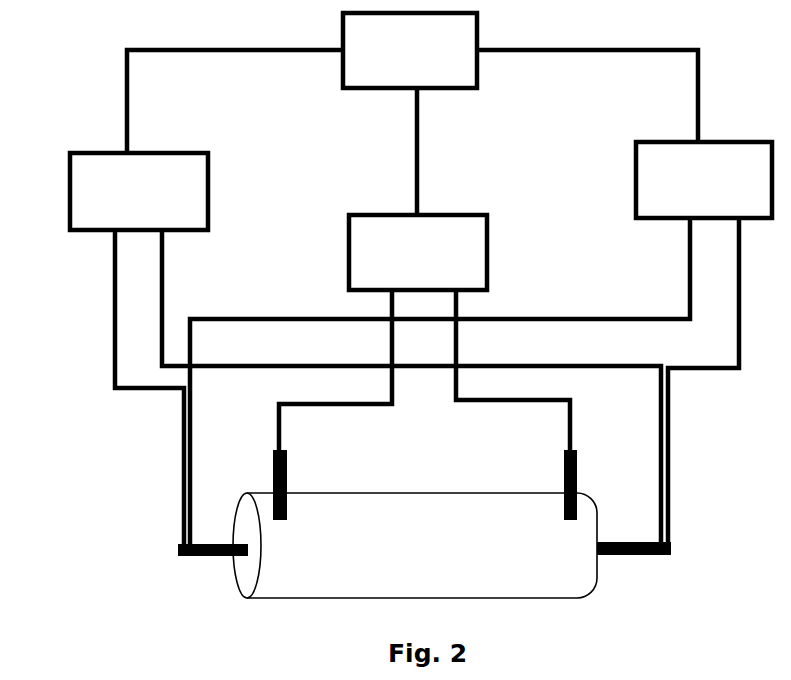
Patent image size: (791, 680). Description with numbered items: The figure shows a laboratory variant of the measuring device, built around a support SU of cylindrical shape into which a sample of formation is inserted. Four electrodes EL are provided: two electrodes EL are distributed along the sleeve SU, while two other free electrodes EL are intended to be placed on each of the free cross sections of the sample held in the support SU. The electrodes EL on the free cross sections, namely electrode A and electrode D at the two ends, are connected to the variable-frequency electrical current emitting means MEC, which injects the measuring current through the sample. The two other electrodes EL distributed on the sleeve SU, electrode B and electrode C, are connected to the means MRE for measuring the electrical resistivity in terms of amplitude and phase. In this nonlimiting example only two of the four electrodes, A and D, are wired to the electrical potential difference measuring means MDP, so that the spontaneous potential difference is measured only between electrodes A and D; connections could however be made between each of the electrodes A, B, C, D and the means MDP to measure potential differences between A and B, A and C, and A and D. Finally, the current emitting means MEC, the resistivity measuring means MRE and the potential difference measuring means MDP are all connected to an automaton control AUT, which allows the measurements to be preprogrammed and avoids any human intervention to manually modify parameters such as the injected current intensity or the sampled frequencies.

The automaton control AUT is at (410, 50).
The variable-frequency electrical current emitting means MEC is at (139, 191).
The electrical potential difference measuring means MDP is at (704, 180).
The means for measuring the electrical resistivity in terms of amplitude and phase MRE is at (418, 252).
The support SU is at (590, 573).
The electrodes EL is at (223, 557).
The electrode A is at (213, 536).
The electrode B is at (294, 485).
The electrode C is at (556, 485).
The electrode D is at (634, 533).